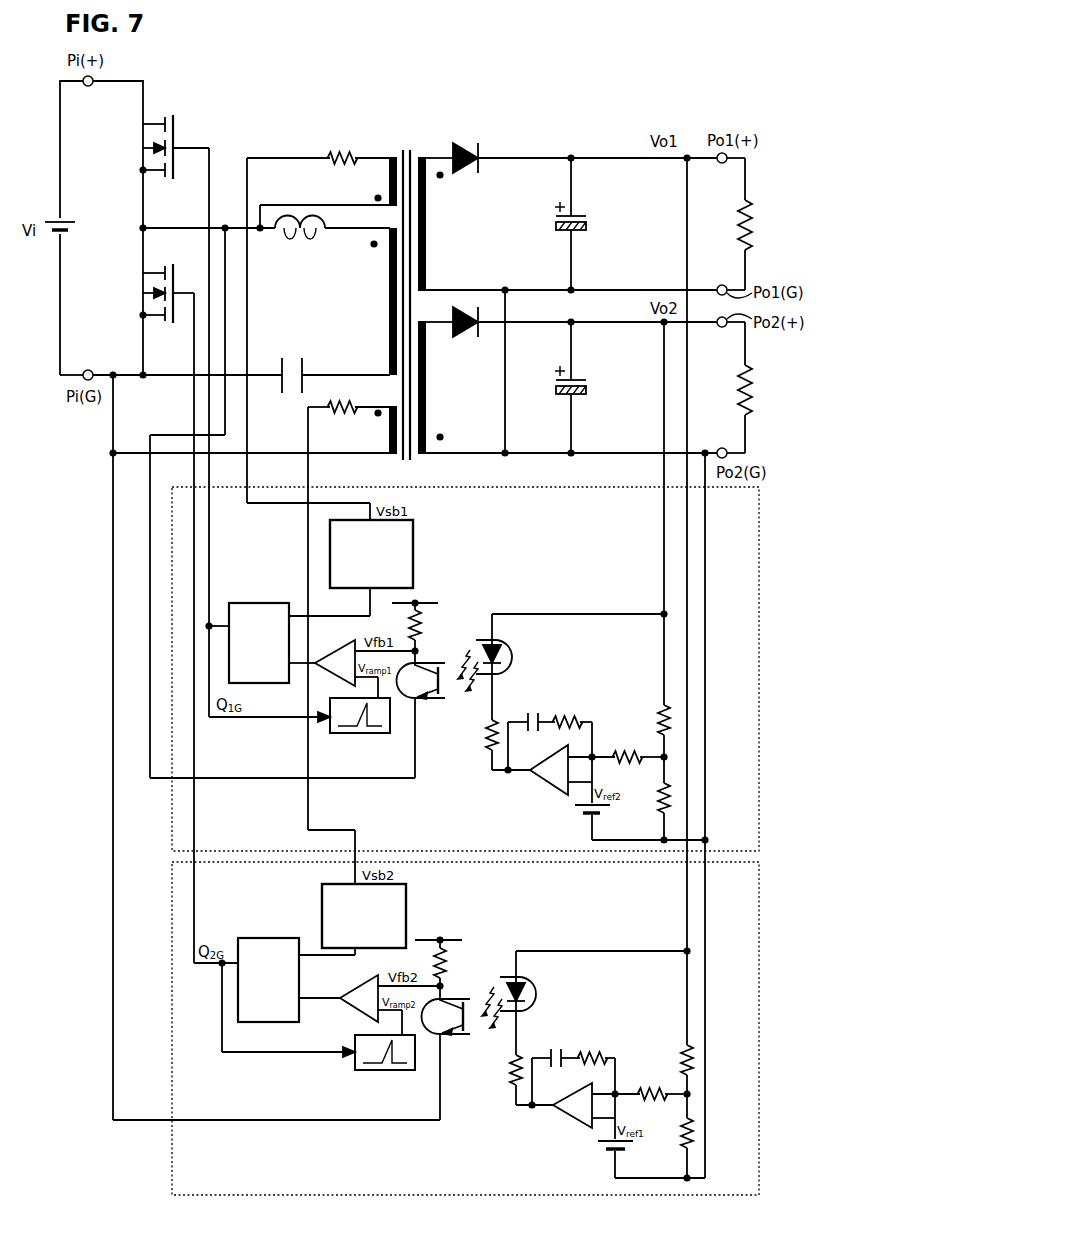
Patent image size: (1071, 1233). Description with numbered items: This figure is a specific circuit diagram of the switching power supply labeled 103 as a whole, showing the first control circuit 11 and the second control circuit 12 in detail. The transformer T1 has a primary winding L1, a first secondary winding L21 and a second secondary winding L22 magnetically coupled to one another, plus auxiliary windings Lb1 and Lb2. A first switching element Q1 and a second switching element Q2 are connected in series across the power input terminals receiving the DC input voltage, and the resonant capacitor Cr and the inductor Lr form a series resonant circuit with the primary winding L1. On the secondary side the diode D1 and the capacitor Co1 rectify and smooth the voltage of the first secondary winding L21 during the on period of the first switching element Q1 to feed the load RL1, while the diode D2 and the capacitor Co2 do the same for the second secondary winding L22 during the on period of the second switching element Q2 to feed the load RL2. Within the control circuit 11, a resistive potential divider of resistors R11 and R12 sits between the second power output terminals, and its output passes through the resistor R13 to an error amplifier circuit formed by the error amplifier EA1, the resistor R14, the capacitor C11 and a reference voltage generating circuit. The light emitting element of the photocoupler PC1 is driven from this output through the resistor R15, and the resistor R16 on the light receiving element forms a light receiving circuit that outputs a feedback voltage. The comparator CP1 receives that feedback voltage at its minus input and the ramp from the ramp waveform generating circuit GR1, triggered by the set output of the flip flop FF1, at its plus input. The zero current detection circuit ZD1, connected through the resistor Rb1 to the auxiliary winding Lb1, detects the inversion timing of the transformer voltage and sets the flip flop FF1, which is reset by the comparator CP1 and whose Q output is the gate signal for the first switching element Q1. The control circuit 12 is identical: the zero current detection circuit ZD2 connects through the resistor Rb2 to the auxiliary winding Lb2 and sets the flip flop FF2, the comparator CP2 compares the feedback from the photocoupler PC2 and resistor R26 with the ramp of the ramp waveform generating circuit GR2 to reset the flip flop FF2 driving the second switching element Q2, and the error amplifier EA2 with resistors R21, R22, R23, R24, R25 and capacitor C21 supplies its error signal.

The switching power supply device 103 is at (755, 86).
The control circuit 11 is at (759, 536).
The control circuit 12 is at (759, 880).
The first switching element Q1 is at (159, 147).
The second switching element Q2 is at (152, 293).
The inductor Lr is at (300, 241).
The resonant capacitor Cr is at (289, 365).
The transformer T1 is at (401, 146).
The primary winding L1 is at (376, 301).
The auxiliary winding Lb1 is at (322, 192).
The auxiliary winding Lb2 is at (255, 430).
The resistor Rb1 is at (342, 148).
The second drive resistor Rb2 is at (342, 397).
The first secondary winding L21 is at (438, 224).
The second secondary winding L22 is at (438, 387).
The diode D1 is at (465, 146).
The diode D2 is at (465, 333).
The capacitor Co1 is at (587, 224).
The capacitor Co2 is at (587, 387).
The load RL1 is at (761, 224).
The load RL2 is at (761, 387).
The zero current detection circuit ZD1 is at (402, 554).
The second zero current detection circuit ZD2 is at (394, 916).
The flip flop FF1 is at (259, 634).
The flip flop FF2 is at (268, 970).
The comparator CP1 is at (335, 655).
The second comparator CP2 is at (357, 990).
The ramp waveform generating circuit GR1 is at (360, 728).
The second ramp generator GR2 is at (385, 1064).
The photocoupler PC1 is at (455, 696).
The second photocoupler PC2 is at (479, 1035).
The error amplifier EA1 is at (540, 778).
The second error amplifier EA2 is at (568, 1115).
The resistor R11 is at (646, 743).
The resistor R12 is at (655, 811).
The resistor R13 is at (627, 748).
The resistor R14 is at (566, 712).
The resistor R15 is at (475, 745).
The resistor R16 is at (423, 625).
The resistor R21 is at (669, 1080).
The resistor R22 is at (676, 1148).
The resistor R23 is at (652, 1085).
The resistor R24 is at (592, 1047).
The resistor R25 is at (499, 1080).
The resistor R26 is at (447, 961).
The capacitor C11 is at (523, 713).
The capacitor C21 is at (549, 1049).